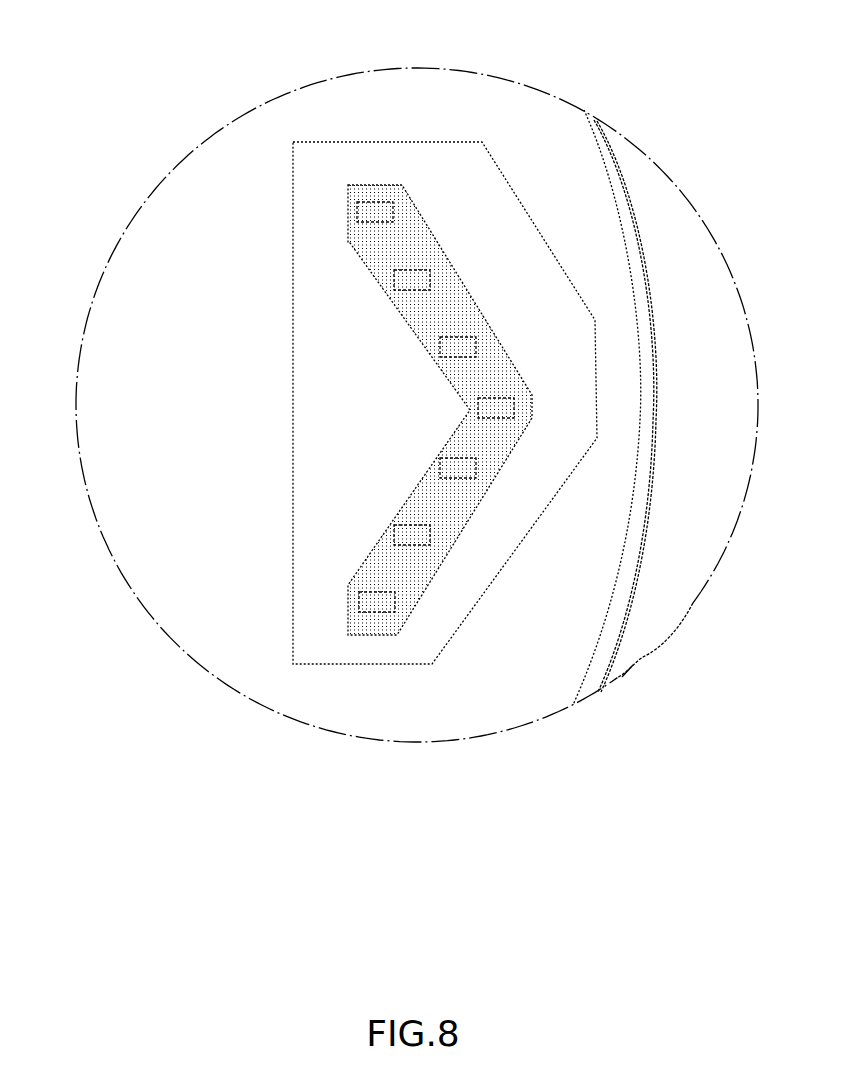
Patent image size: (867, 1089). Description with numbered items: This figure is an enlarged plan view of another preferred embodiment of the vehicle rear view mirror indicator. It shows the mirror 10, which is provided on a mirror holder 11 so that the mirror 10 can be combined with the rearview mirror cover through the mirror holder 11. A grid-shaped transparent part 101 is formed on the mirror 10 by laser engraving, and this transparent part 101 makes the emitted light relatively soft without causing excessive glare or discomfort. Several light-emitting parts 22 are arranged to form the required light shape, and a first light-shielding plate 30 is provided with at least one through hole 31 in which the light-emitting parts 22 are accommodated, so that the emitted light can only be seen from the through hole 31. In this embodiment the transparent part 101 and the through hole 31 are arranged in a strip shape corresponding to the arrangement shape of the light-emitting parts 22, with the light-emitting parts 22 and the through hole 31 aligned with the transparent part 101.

The mirror 10 is at (180, 615).
The mirror holder 11 is at (615, 653).
The light-emitting parts 22 is at (347, 183).
The first light-shielding plate 30 is at (290, 240).
The through hole 31 is at (402, 190).
The transparent part 101 is at (420, 325).